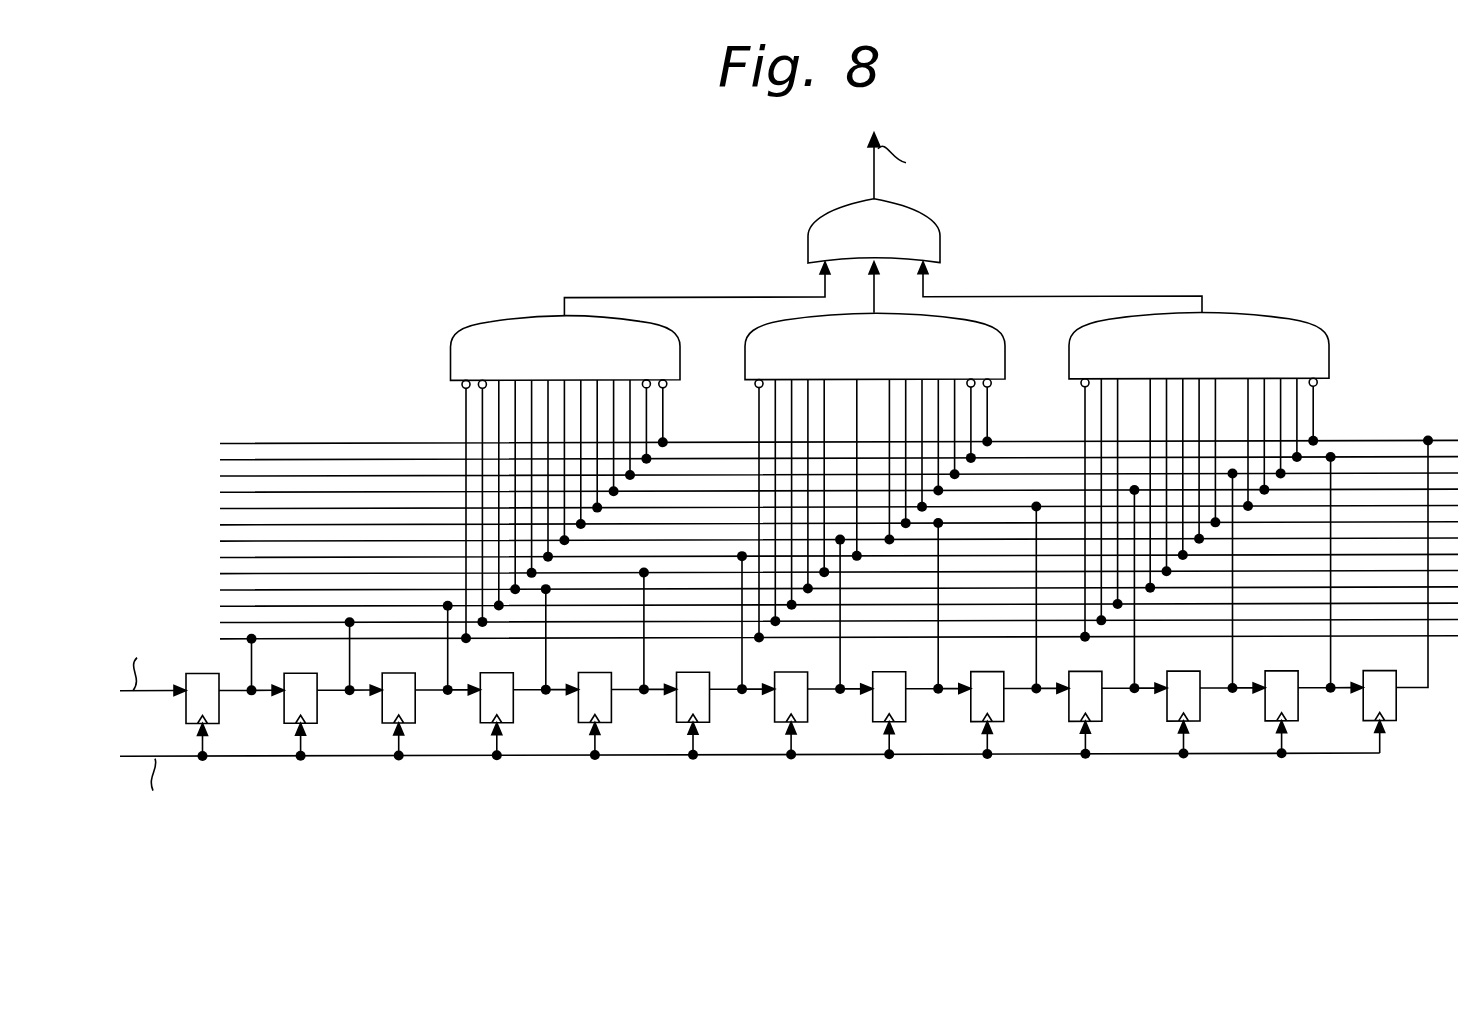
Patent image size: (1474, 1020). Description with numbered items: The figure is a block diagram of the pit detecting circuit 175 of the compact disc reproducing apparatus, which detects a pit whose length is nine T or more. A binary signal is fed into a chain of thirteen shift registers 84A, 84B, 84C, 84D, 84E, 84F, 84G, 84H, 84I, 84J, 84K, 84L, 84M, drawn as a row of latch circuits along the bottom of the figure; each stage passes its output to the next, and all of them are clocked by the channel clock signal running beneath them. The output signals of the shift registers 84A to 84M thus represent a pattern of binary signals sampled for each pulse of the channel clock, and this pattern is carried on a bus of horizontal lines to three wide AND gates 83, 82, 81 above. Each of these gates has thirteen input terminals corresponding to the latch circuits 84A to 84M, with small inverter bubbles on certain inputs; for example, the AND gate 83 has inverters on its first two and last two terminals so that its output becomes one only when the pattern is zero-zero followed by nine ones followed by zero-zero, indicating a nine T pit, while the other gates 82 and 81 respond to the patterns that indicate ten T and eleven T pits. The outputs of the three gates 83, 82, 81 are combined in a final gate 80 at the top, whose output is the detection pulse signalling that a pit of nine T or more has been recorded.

The 9 T≦pit detecting circuit 175 is at (707, 233).
The AND gate 80 is at (942, 232).
The AND gate 81 is at (1332, 342).
The AND gate 82 is at (745, 346).
The AND gate 83 is at (449, 348).
The shift register 84A is at (203, 672).
The shift register 84B is at (284, 722).
The shift register 84C is at (382, 722).
The shift register 84D is at (480, 722).
The shift register 84E is at (578, 722).
The shift register 84F is at (676, 722).
The shift register 84G is at (775, 722).
The shift register 84H is at (873, 722).
The shift register 84I is at (971, 722).
The shift register 84J is at (1069, 722).
The shift register 84K is at (1167, 722).
The shift register 84L is at (1265, 722).
The shift register 84M is at (1363, 722).